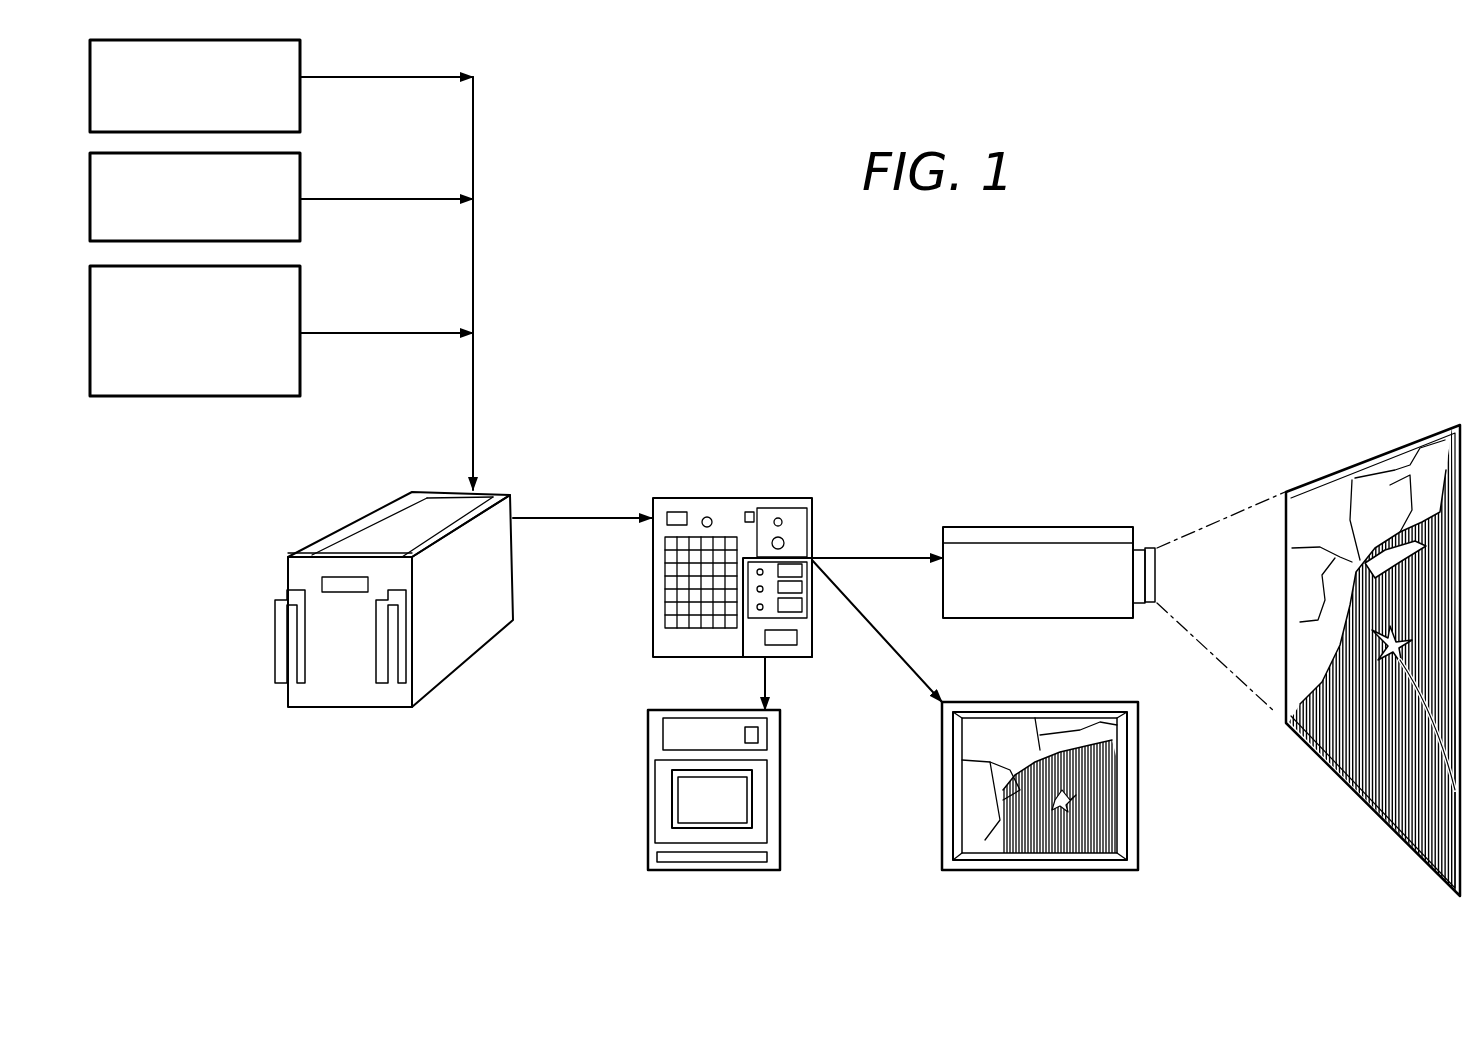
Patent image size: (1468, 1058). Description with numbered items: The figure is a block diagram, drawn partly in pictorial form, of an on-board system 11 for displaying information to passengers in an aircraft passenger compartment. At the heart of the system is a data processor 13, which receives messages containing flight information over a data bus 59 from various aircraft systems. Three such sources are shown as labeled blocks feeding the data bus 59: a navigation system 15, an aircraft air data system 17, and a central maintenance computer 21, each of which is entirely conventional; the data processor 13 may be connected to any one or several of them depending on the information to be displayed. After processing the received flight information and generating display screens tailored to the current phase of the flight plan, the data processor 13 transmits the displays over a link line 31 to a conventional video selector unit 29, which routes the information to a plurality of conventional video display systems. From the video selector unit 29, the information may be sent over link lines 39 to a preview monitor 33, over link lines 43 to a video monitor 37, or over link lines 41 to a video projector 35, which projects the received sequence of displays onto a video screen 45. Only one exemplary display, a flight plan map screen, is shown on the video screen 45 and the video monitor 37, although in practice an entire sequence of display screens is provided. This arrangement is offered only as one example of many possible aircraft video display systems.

The on-board system 11 is at (950, 447).
The data processor 13 is at (345, 522).
The navigation system 15 is at (300, 63).
The aircraft air data system 17 is at (300, 182).
The central maintenance computer 21 is at (300, 318).
The video selector unit 29 is at (733, 498).
The link line 31 is at (572, 525).
The preview monitor 33 is at (648, 776).
The video projector 35 is at (1040, 527).
The video monitor 37 is at (1030, 702).
The link lines 39 is at (763, 678).
The link lines 41 is at (868, 554).
The link lines 43 is at (884, 650).
The video screen 45 is at (1366, 472).
The data bus 59 is at (475, 390).